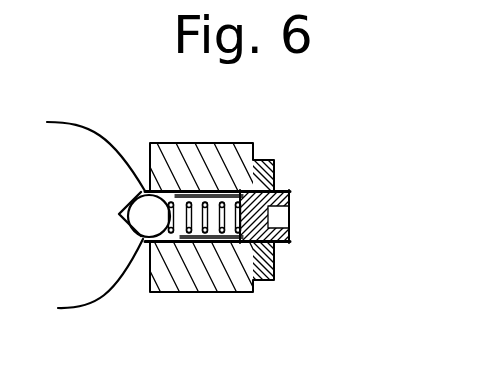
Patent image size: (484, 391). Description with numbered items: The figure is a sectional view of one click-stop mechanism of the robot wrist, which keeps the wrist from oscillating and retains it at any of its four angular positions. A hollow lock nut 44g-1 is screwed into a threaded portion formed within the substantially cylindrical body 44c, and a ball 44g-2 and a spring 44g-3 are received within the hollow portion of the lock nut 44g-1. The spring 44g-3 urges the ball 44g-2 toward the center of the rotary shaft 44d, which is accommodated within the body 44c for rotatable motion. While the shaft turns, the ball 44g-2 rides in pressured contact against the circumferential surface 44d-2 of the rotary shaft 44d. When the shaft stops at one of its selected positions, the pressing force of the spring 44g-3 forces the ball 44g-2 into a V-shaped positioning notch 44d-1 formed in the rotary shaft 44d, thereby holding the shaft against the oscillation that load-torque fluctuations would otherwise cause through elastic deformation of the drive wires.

The cylindrical body 44c is at (218, 150).
The rotary shaft 44d is at (97, 153).
The V-shaped positioning notch 44d-1 is at (120, 217).
The circumferential surface 44d-2 is at (125, 150).
The hollow lock nut 44g-1 is at (275, 180).
The ball 44g-2 is at (145, 229).
The spring 44g-3 is at (211, 235).